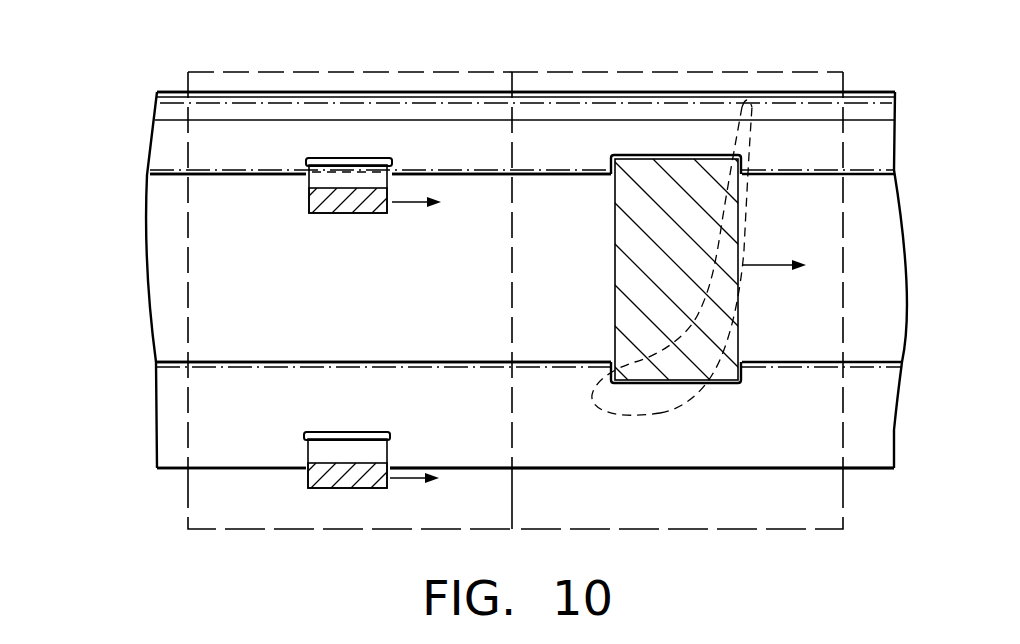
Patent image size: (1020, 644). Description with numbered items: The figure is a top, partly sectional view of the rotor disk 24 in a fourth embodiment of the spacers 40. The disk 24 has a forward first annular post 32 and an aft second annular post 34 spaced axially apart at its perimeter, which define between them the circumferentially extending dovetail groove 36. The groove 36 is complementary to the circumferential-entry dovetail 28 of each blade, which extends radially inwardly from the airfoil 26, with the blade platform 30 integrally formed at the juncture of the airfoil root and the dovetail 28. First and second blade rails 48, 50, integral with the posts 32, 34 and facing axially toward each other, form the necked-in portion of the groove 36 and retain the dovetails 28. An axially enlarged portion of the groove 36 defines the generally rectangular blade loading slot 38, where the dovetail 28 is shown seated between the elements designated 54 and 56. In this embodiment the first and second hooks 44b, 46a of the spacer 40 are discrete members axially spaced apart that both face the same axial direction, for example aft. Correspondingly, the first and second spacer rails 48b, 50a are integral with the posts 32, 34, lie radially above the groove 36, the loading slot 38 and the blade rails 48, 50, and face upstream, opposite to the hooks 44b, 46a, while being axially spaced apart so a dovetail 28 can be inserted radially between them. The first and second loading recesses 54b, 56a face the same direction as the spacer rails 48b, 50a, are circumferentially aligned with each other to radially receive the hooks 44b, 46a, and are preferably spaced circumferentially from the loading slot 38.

The rotor disk 24 is at (157, 84).
The second annular post 34 is at (148, 157).
The dovetail groove 36 is at (158, 253).
The first annular post 32 is at (157, 405).
The spacer 40 is at (303, 72).
The blade platform 30 is at (631, 72).
The second loading recess 56a is at (365, 158).
The second hook 46a is at (341, 214).
The second spacer rail 50a is at (263, 177).
The second rail 50 is at (453, 177).
The upper bond 56 is at (659, 155).
The lower bond 54 is at (721, 385).
The dovetail 28 is at (628, 318).
The blade loading slot 38 is at (604, 198).
The airfoil 26 is at (662, 413).
The first rail 48 is at (465, 362).
The first loading recess 54b is at (346, 432).
The first hook 44b is at (330, 488).
The first spacer rail 48b is at (484, 470).